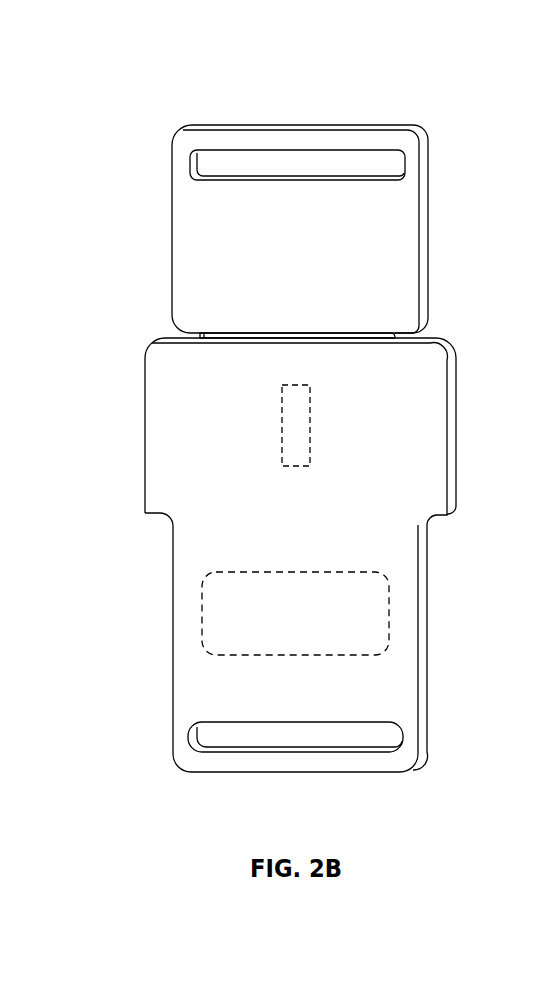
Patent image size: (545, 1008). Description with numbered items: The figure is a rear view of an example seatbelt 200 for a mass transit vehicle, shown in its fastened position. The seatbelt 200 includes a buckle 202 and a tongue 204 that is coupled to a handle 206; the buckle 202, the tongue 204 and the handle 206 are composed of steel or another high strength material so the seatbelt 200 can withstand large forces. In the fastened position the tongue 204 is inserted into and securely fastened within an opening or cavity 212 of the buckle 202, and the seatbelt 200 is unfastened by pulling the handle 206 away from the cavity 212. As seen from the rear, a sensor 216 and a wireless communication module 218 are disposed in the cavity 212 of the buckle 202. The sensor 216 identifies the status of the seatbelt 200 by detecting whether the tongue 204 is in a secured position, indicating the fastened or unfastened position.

The seatbelt 200 is at (201, 96).
The buckle 202 is at (180, 394).
The tongue 204 is at (228, 337).
The handle 206 is at (198, 246).
The cavity 212 is at (426, 330).
The sensor 216 is at (282, 398).
The wireless communication module 218 is at (345, 627).